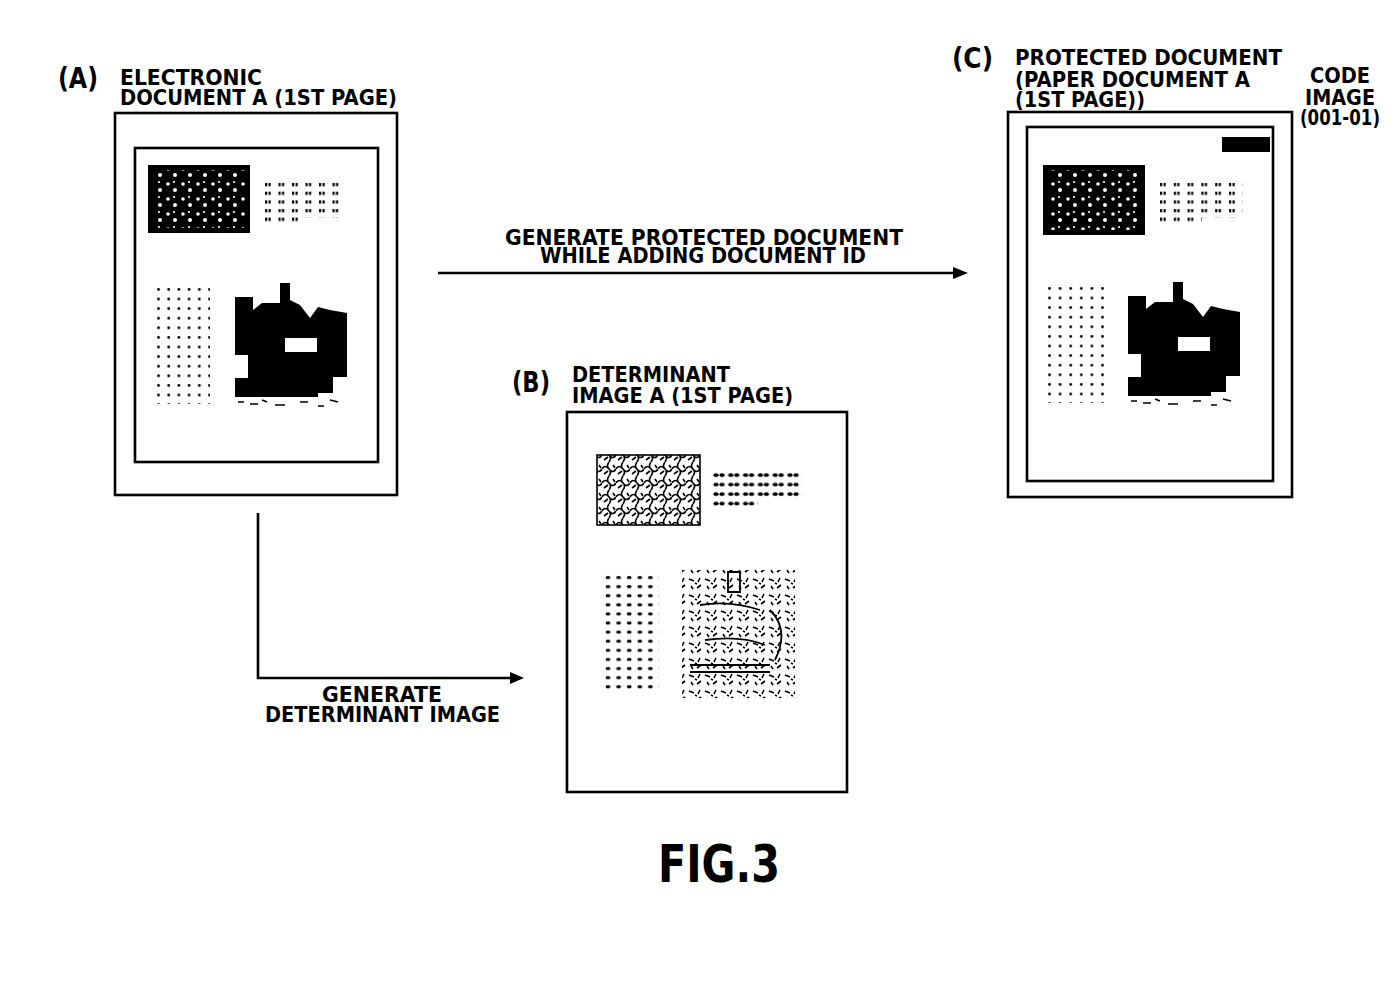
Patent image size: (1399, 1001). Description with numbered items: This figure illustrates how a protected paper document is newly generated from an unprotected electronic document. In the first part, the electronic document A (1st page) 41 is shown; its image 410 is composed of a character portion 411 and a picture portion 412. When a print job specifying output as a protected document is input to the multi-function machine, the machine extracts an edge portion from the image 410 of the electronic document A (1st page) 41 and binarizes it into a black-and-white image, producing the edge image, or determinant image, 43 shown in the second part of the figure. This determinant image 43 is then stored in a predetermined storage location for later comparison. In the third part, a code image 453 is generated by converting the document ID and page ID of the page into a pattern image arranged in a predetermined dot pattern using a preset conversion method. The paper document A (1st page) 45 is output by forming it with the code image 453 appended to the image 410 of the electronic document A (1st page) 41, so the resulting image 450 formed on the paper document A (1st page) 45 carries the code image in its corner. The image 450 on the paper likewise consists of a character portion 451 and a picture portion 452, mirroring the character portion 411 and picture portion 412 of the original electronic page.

The electronic document A (1st page) 41 is at (397, 117).
The image of the electronic document A (1st page) 410 is at (378, 160).
The character portion 411 is at (345, 198).
The picture portion 412 is at (150, 222).
The edge image (determinant image) 43 is at (847, 550).
The paper document A (1st page) 45 is at (1008, 130).
The image of the paper document A (1st page) 450 is at (1027, 175).
The character portion 451 is at (1243, 203).
The picture portion 452 is at (1045, 222).
The code image 453 is at (1270, 143).